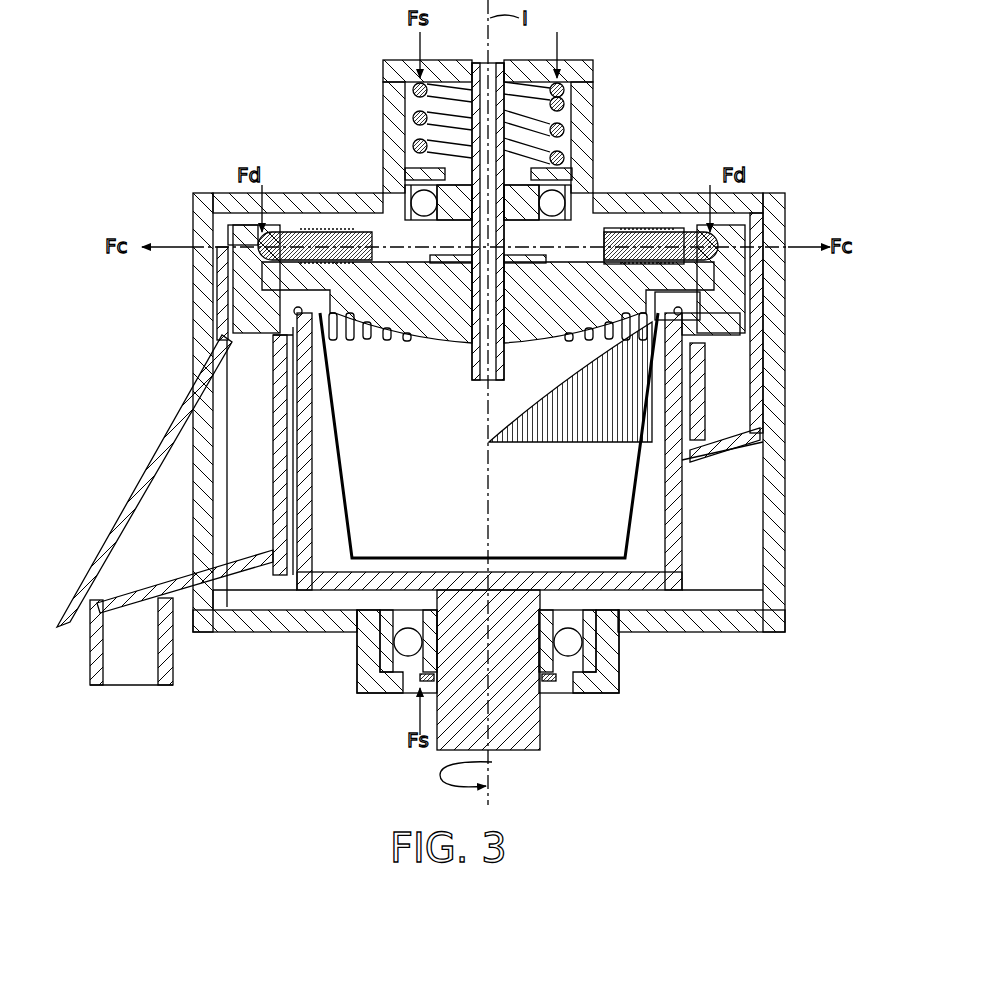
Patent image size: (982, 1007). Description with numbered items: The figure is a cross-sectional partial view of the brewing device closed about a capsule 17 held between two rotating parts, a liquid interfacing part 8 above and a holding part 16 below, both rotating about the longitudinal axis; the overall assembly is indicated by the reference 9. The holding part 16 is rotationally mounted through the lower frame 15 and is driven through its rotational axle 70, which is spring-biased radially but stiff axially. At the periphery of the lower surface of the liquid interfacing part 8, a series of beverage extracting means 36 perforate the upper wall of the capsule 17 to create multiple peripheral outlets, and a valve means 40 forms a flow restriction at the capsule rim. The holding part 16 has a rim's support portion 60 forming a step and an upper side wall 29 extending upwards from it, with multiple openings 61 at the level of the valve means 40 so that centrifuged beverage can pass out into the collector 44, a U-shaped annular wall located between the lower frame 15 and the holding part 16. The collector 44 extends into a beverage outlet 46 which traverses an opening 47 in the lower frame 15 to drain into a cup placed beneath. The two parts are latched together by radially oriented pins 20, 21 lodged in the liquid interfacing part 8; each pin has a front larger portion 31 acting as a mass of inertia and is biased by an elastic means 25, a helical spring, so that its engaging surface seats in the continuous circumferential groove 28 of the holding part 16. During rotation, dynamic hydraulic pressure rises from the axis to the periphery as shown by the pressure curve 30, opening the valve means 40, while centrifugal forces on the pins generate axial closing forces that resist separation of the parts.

The liquid interfacing part 8 is at (605, 215).
The housing top plate 9 is at (200, 193).
The lower frame 15 is at (778, 553).
The holding part 16 is at (675, 510).
The capsule 17 is at (325, 410).
The pin 20 is at (735, 270).
The pin 21 is at (300, 236).
The elastic means 25 is at (650, 236).
The groove 28 is at (262, 238).
The upper side wall 29 is at (233, 232).
The pressure curve 30 is at (590, 445).
The front larger portion 31 is at (705, 240).
The beverage extracting means 36 is at (350, 340).
The valve means 40 is at (700, 300).
The collector 44 is at (760, 353).
The beverage outlet 46 is at (93, 660).
The opening 47 is at (185, 588).
The rim's support portion 60 is at (265, 345).
The openings 61 is at (240, 293).
The rotational axle 70 is at (535, 740).